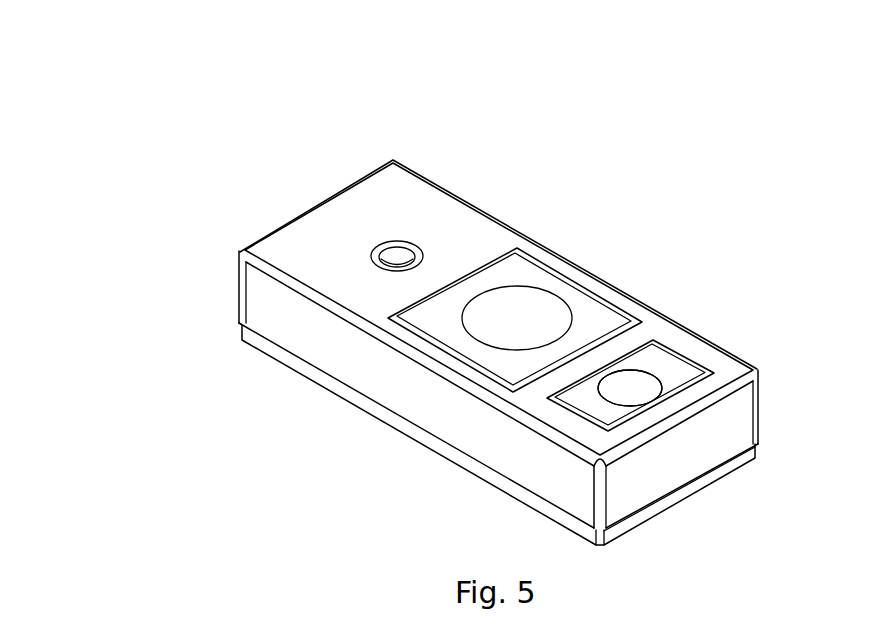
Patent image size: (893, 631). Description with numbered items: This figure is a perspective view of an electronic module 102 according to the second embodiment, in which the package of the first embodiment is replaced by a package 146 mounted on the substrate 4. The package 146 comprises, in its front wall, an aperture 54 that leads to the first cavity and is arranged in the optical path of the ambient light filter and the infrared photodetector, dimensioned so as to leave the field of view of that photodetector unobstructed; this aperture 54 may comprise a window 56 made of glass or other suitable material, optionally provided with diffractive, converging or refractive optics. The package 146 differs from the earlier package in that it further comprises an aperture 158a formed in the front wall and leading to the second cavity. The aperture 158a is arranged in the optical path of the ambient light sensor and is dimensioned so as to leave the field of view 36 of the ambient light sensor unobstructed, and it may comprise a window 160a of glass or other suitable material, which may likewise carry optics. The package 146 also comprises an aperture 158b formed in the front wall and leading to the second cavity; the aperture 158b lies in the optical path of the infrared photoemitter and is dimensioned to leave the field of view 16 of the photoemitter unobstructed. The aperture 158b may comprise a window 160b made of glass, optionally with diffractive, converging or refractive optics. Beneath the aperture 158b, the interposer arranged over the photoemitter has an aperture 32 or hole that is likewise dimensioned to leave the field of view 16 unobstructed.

The electronic module 102 is at (85, 155).
The substrate 4 is at (287, 362).
The package 146 is at (295, 252).
The aperture 54 is at (393, 244).
The window 56 is at (407, 258).
The aperture 158a is at (483, 263).
The window 160a is at (565, 292).
The field of view 36 is at (523, 284).
The aperture 158b is at (637, 342).
The window 160b is at (681, 373).
The field of view 16 is at (654, 371).
The aperture 32 is at (632, 406).